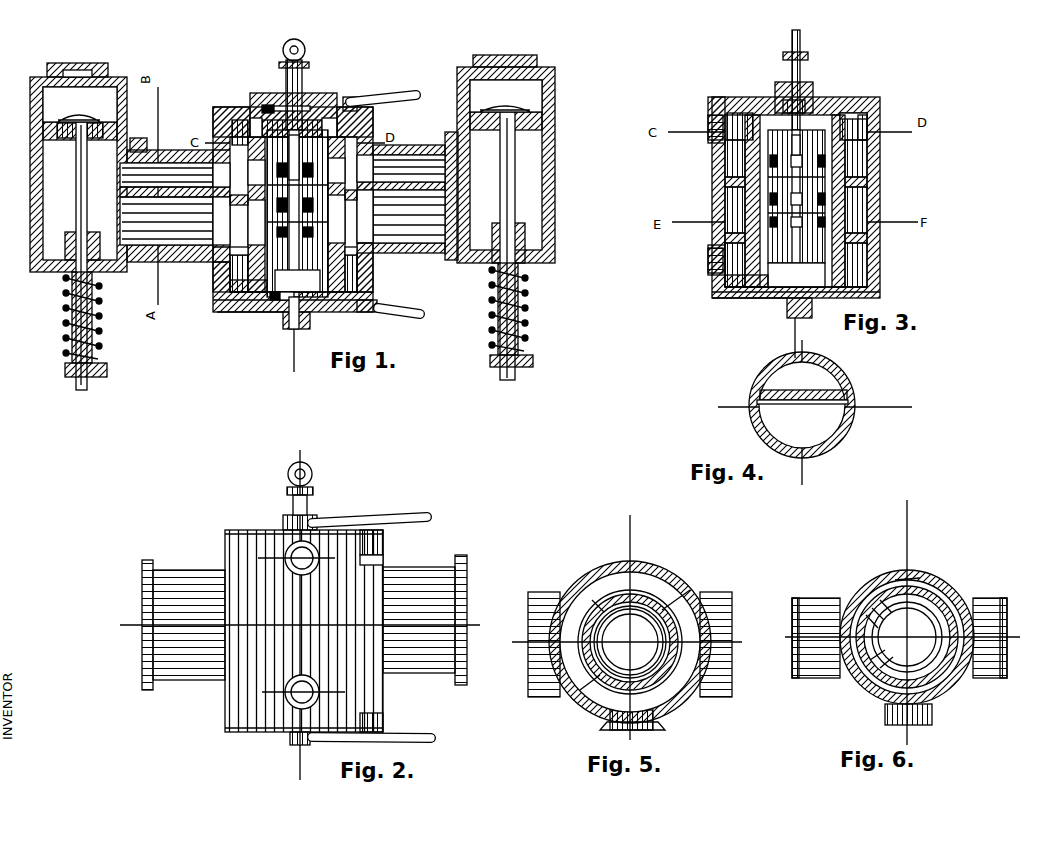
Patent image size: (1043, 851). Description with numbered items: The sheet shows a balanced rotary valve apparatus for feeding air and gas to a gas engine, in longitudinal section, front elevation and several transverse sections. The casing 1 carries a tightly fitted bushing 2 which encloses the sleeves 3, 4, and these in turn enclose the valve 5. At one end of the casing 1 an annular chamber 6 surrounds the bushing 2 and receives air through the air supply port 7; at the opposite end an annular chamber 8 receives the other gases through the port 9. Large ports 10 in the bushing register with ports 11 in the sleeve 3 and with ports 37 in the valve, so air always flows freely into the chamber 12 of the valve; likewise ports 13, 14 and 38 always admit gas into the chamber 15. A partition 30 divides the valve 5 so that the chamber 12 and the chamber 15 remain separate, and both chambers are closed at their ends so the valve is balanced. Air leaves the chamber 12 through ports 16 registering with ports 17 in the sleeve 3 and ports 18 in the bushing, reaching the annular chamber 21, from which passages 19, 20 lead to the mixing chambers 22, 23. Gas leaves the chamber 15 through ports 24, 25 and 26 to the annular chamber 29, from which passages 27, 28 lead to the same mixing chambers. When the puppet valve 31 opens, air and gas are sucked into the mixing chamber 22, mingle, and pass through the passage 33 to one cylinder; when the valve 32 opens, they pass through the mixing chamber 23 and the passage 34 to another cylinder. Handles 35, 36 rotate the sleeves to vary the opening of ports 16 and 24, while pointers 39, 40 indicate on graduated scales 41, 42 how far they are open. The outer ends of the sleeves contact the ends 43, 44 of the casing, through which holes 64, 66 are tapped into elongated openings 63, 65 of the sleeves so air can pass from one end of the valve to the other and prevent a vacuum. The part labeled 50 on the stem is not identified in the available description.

In FIG. 1, the casing 1 is at (225, 290).
In FIG. 3, the casing 1 is at (880, 158).
In FIG. 2, the casing 1 is at (225, 705).
In FIG. 5, the casing 1 is at (634, 566).
In FIG. 6, the casing 1 is at (906, 566).
In FIG. 1, the bushing 2 is at (255, 300).
In FIG. 3, the bushing 2 is at (860, 178).
In FIG. 5, the bushing 2 is at (668, 615).
In FIG. 6, the bushing 2 is at (942, 601).
In FIG. 1, the sleeve 3 is at (305, 318).
In FIG. 3, the sleeve 3 is at (786, 302).
In FIG. 6, the sleeve 3 is at (893, 592).
In FIG. 1, the sleeve 4 is at (312, 115).
In FIG. 3, the sleeve 4 is at (762, 100).
In FIG. 5, the sleeve 4 is at (662, 607).
In FIG. 1, the valve 5 is at (250, 265).
In FIG. 3, the valve 5 is at (842, 205).
In FIG. 5, the valve 5 is at (597, 688).
In FIG. 6, the valve 5 is at (870, 672).
In FIG. 1, the annular chamber 6 is at (225, 270).
In FIG. 3, the annular chamber 6 is at (875, 270).
In FIG. 6, the annular chamber 6 is at (918, 576).
In FIG. 3, the air supply port 7 is at (715, 262).
In FIG. 2, the air supply port 7 is at (297, 696).
In FIG. 1, the annular chamber 8 is at (232, 128).
In FIG. 3, the annular chamber 8 is at (868, 125).
In FIG. 5, the annular chamber 8 is at (588, 593).
In FIG. 3, the port 9 is at (712, 128).
In FIG. 2, the port 9 is at (297, 553).
In FIG. 5, the port 9 is at (628, 735).
In FIG. 1, the ports 10 is at (245, 285).
In FIG. 3, the ports 10 is at (738, 272).
In FIG. 1, the ports 11 is at (248, 295).
In FIG. 3, the ports 11 is at (742, 282).
In FIG. 1, the chamber 12 is at (297, 213).
In FIG. 3, the chamber 12 is at (796, 208).
In FIG. 6, the chamber 12 is at (907, 637).
In FIG. 1, the ports 13 is at (325, 122).
In FIG. 3, the ports 13 is at (862, 113).
In FIG. 5, the ports 13 is at (594, 600).
In FIG. 1, the ports 14 is at (253, 120).
In FIG. 3, the ports 14 is at (852, 110).
In FIG. 5, the ports 14 is at (607, 600).
In FIG. 1, the chamber 15 is at (296, 157).
In FIG. 3, the chamber 15 is at (798, 145).
In FIG. 5, the chamber 15 is at (630, 642).
In FIG. 1, the ports 16 is at (240, 262).
In FIG. 6, the ports 16 is at (875, 608).
In FIG. 1, the ports 17 is at (235, 253).
In FIG. 6, the ports 17 is at (877, 603).
In FIG. 1, the ports 18 is at (218, 258).
In FIG. 6, the ports 18 is at (884, 597).
In FIG. 1, the passage 19 is at (166, 221).
In FIG. 4, the passage 19 is at (802, 414).
In FIG. 6, the passage 19 is at (806, 629).
In FIG. 1, the passage 20 is at (409, 216).
In FIG. 6, the passage 20 is at (1000, 620).
In FIG. 3, the annular chamber 21 is at (735, 215).
In FIG. 6, the annular chamber 21 is at (852, 665).
In FIG. 1, the mixing chamber 22 is at (78, 226).
In FIG. 1, the mixing chamber 23 is at (506, 217).
In FIG. 1, the ports 24 is at (215, 160).
In FIG. 1, the ports 25 is at (210, 150).
In FIG. 1, the ports 26 is at (200, 157).
In FIG. 1, the passage 27 is at (166, 175).
In FIG. 4, the passage 27 is at (803, 385).
In FIG. 1, the passage 28 is at (409, 168).
In FIG. 3, the annular chamber 29 is at (730, 165).
In FIG. 1, the partition 30 is at (248, 200).
In FIG. 3, the partition 30 is at (735, 200).
In FIG. 1, the valve 31 is at (75, 118).
In FIG. 1, the valve 32 is at (515, 110).
In FIG. 1, the passage 33 is at (80, 104).
In FIG. 1, the passage 34 is at (506, 96).
In FIG. 1, the handle 35 is at (413, 320).
In FIG. 2, the handle 35 is at (432, 744).
In FIG. 1, the handle 36 is at (412, 92).
In FIG. 2, the handle 36 is at (426, 514).
In FIG. 1, the ports 37 is at (262, 302).
In FIG. 3, the ports 37 is at (768, 296).
In FIG. 1, the ports 38 is at (262, 120).
In FIG. 3, the ports 38 is at (812, 110).
In FIG. 5, the ports 38 is at (622, 607).
In FIG. 1, the pointer 39 is at (385, 308).
In FIG. 2, the pointer 39 is at (395, 733).
In FIG. 1, the pointer 40 is at (355, 103).
In FIG. 2, the pointer 40 is at (386, 534).
In FIG. 2, the graduated scale 41 is at (385, 715).
In FIG. 2, the graduated scale 42 is at (377, 545).
In FIG. 1, the end 43 is at (240, 302).
In FIG. 3, the end 43 is at (760, 290).
In FIG. 1, the end 44 is at (235, 110).
In FIG. 3, the end 44 is at (727, 100).
In FIG. 1, the eye bolt stem 50 is at (300, 72).
In FIG. 3, the eye bolt stem 50 is at (801, 67).
In FIG. 2, the eye bolt stem 50 is at (310, 500).
In FIG. 1, the opening 63 is at (272, 312).
In FIG. 1, the hole 64 is at (288, 318).
In FIG. 1, the opening 65 is at (265, 105).
In FIG. 1, the hole 66 is at (280, 106).